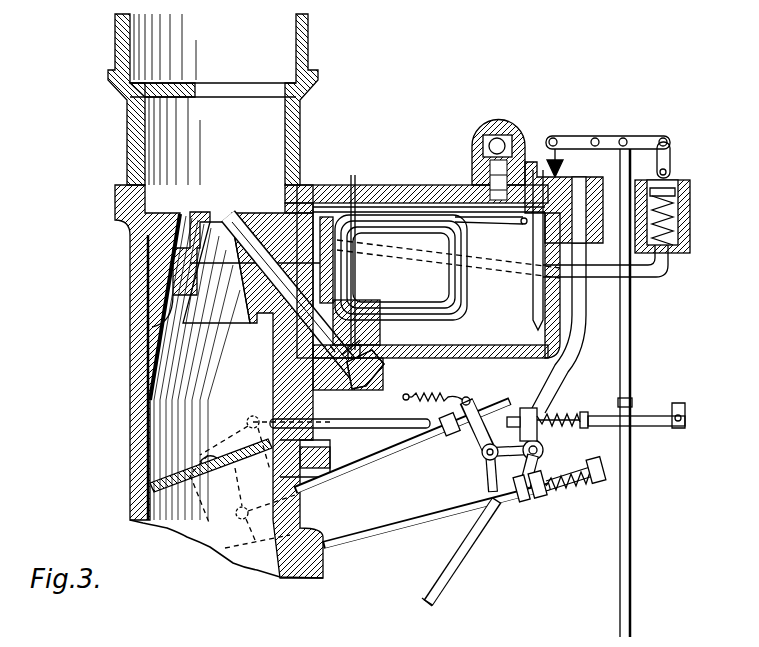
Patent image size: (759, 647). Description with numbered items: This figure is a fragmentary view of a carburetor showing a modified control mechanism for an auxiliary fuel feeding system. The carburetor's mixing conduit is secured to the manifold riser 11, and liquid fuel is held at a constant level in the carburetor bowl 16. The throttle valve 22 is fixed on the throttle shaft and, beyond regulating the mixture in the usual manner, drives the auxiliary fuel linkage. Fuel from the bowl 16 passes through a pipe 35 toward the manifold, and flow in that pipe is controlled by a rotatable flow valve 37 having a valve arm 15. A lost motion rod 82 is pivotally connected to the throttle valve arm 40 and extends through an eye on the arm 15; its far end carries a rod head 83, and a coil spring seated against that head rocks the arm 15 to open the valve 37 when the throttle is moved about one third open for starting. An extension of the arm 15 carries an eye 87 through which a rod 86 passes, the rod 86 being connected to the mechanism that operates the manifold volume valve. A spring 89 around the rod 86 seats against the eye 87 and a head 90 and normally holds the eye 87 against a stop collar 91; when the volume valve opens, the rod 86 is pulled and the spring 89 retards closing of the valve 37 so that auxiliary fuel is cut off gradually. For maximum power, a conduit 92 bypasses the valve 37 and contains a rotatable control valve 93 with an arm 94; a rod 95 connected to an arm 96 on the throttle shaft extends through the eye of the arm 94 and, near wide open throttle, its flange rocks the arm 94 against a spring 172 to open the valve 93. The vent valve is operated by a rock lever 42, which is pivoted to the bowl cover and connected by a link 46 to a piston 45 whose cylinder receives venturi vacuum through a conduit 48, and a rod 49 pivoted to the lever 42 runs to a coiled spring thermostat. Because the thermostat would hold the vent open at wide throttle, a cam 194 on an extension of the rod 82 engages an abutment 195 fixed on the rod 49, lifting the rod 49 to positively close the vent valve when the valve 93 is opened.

The manifold riser 11 is at (297, 517).
The valve arm 15 is at (538, 436).
The carburetor bowl 16 is at (471, 356).
The throttle valve 22 is at (265, 456).
The pipe 35 is at (466, 556).
The flow valve 37 is at (543, 453).
The throttle valve arm 40 is at (250, 420).
The rock lever 42 is at (644, 130).
The piston 45 is at (690, 186).
The link 46 is at (670, 162).
The conduit 48 is at (655, 274).
The rod 49 is at (632, 497).
The lost motion rod 82 is at (407, 399).
The rod head 83 is at (582, 416).
The rod 86 is at (402, 531).
The eye 87 is at (540, 498).
The spring 89 is at (571, 491).
The head 90 is at (600, 482).
The stop collar 91 is at (524, 501).
The conduit 92 is at (490, 486).
The control valve 93 is at (482, 455).
The arm 94 is at (478, 434).
The rod 95 is at (381, 465).
The arm 96 is at (240, 520).
The spring 172 is at (467, 397).
The cam 194 is at (680, 410).
The abutment 195 is at (633, 402).